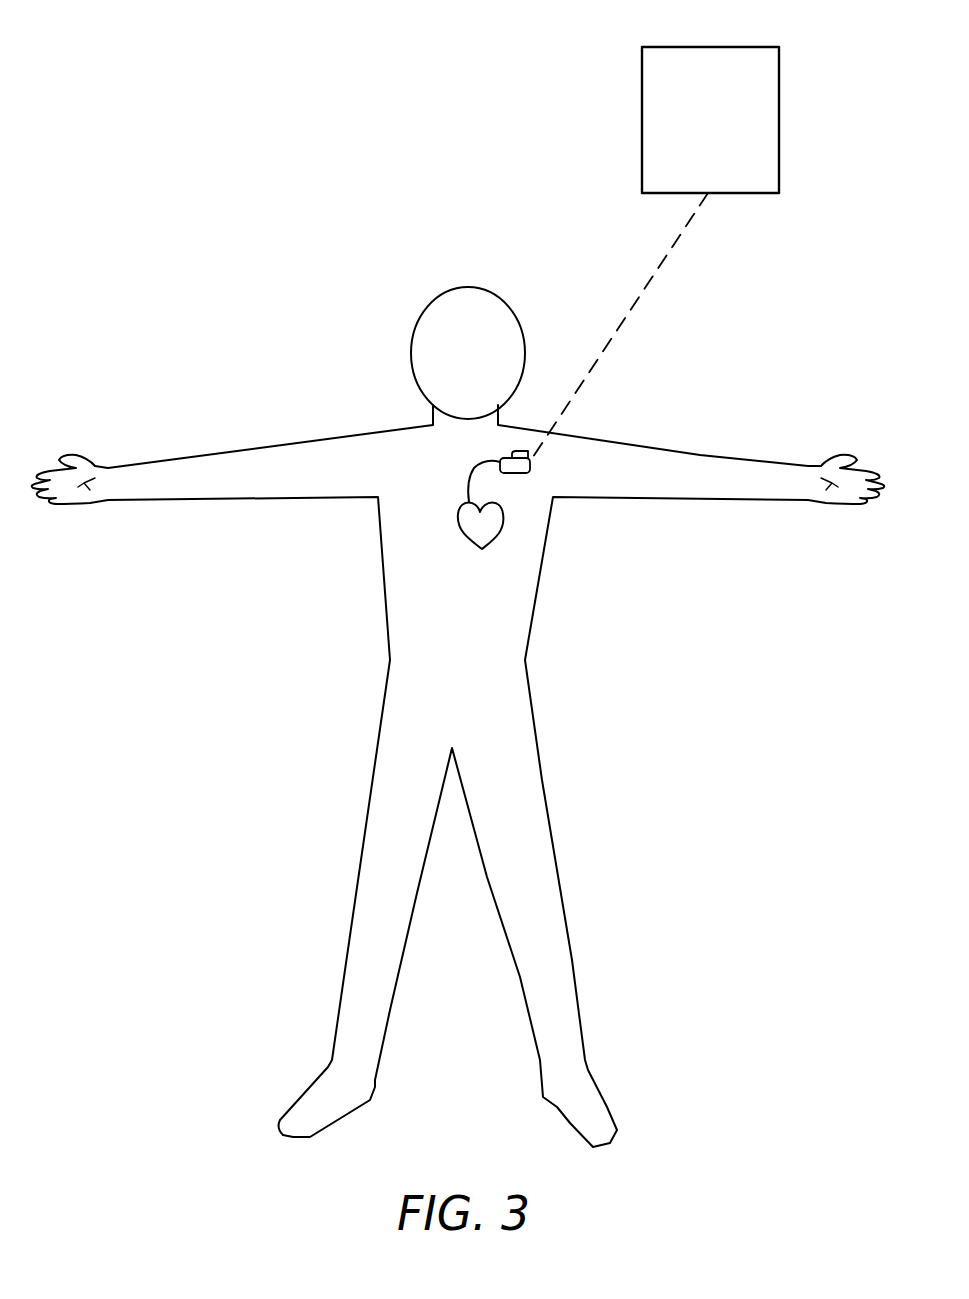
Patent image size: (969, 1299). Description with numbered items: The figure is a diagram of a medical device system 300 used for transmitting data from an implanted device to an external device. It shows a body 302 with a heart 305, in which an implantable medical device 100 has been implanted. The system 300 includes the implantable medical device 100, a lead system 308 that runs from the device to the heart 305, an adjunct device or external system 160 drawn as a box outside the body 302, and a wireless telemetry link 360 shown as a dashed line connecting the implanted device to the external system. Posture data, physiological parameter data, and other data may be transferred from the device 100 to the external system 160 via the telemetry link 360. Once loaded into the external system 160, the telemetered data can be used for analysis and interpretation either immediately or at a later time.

The medical device system 300 is at (193, 53).
The body 302 is at (393, 608).
The heart 305 is at (480, 549).
The lead system 308 is at (468, 487).
The implantable medical device 100 is at (530, 467).
The external system 160 is at (779, 120).
The wireless telemetry link 360 is at (640, 298).